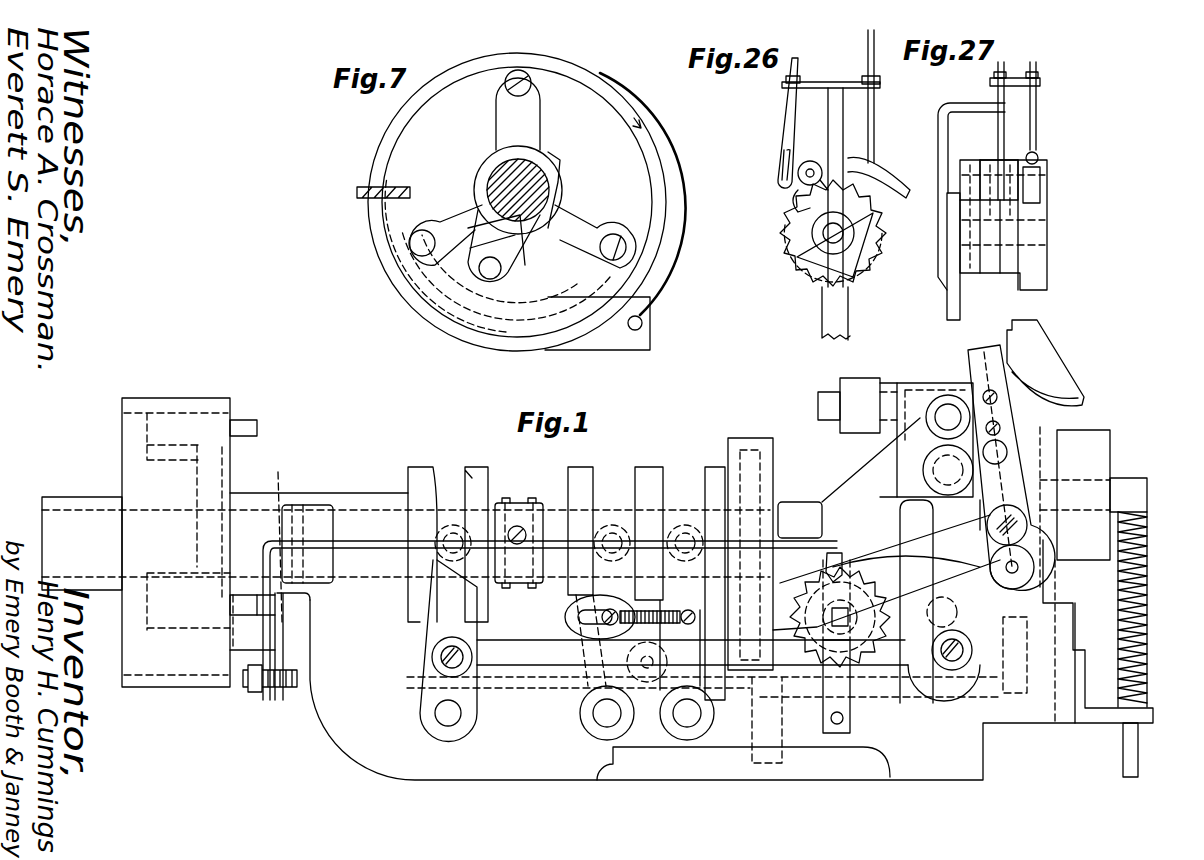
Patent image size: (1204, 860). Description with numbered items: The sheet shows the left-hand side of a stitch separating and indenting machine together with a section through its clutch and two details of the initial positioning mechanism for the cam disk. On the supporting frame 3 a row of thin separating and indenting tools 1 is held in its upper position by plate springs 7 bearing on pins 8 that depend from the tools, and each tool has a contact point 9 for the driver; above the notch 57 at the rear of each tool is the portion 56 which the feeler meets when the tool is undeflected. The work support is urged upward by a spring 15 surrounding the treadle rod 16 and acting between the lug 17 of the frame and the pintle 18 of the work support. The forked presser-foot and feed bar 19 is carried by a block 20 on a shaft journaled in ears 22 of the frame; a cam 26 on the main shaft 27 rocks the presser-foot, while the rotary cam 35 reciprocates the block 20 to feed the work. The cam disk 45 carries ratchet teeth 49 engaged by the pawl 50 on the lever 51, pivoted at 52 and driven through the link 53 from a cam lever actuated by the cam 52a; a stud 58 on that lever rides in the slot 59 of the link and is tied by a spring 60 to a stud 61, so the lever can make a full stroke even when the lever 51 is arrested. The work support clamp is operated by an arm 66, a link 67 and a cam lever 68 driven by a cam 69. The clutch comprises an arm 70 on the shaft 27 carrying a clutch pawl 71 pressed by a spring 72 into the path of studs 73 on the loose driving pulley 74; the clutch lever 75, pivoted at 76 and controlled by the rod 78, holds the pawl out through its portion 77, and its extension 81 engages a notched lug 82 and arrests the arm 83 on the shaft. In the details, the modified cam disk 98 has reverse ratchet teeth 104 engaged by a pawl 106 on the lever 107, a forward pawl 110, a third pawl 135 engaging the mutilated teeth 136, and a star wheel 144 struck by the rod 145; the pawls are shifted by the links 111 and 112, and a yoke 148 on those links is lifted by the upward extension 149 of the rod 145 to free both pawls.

In FIG. 1, the separating and indenting tools 1 is at (1050, 365).
In FIG. 1, the supporting frame 3 is at (375, 758).
In FIG. 1, the plate springs 7 is at (286, 587).
In FIG. 1, the pins 8 is at (823, 715).
In FIG. 26, the contact points 9 is at (790, 235).
In FIG. 1, the spring 15 is at (1148, 548).
In FIG. 1, the treadle rod 16 is at (1138, 752).
In FIG. 1, the lug 17 is at (1148, 712).
In FIG. 1, the pintle 18 is at (1148, 492).
In FIG. 1, the forked presser-foot and feed bar 19 is at (1080, 400).
In FIG. 1, the block 20 is at (948, 383).
In FIG. 7, the ears 22 is at (492, 178).
In FIG. 1, the cam 26 is at (715, 462).
In FIG. 1, the main shaft 27 is at (88, 497).
In FIG. 1, the rotary cam 35 is at (750, 438).
In FIG. 1, the cam disk 45 is at (840, 617).
In FIG. 1, the ratchet teeth 49 is at (838, 560).
In FIG. 1, the pawl 50 is at (884, 555).
In FIG. 1, the lever 51 is at (1020, 478).
In FIG. 1, the pivot 52 is at (590, 695).
In FIG. 1, the cam 52a is at (590, 475).
In FIG. 1, the link 53 is at (748, 605).
In FIG. 1, the portion above the notch 56 is at (1008, 322).
In FIG. 1, the notch 57 is at (1037, 322).
In FIG. 1, the stud 58 is at (600, 624).
In FIG. 1, the slot 59 is at (578, 612).
In FIG. 1, the spring 60 is at (672, 610).
In FIG. 1, the stud 61 is at (688, 625).
In FIG. 1, the arm 66 is at (935, 513).
In FIG. 1, the link 67 is at (893, 690).
In FIG. 1, the cam lever 68 is at (415, 647).
In FIG. 1, the cam 69 is at (410, 475).
In FIG. 7, the arm 70 is at (520, 272).
In FIG. 7, the clutch pawl 71 is at (520, 292).
In FIG. 1, the clutch pawl 71 is at (285, 638).
In FIG. 7, the spring 72 is at (563, 203).
In FIG. 7, the studs 73 is at (627, 252).
In FIG. 1, the studs 73 is at (242, 425).
In FIG. 7, the loose driving pulley 74 is at (668, 162).
In FIG. 1, the clutch lever 75 is at (345, 544).
In FIG. 1, the pivot 76 is at (302, 515).
In FIG. 7, the downwardly and laterally extending portion 77 is at (490, 347).
In FIG. 1, the downwardly and laterally extending portion 77 is at (265, 680).
In FIG. 1, the rod 78 is at (290, 695).
In FIG. 1, the extension 81 is at (552, 545).
In FIG. 1, the notched lug 82 is at (800, 520).
In FIG. 1, the arm 83 is at (515, 500).
In FIG. 27, the cam disk 98 is at (1038, 262).
In FIG. 27, the ratchet teeth 104 is at (1020, 290).
In FIG. 26, the pawl 106 is at (812, 160).
In FIG. 27, the pawl 106 is at (1038, 152).
In FIG. 26, the lever 107 is at (795, 200).
In FIG. 27, the lever 107 is at (943, 200).
In FIG. 26, the pawl 110 is at (891, 177).
In FIG. 27, the pawl 110 is at (1042, 175).
In FIG. 26, the link 111 is at (785, 124).
In FIG. 27, the link 111 is at (1000, 138).
In FIG. 26, the link 112 is at (880, 92).
In FIG. 27, the link 112 is at (1040, 115).
In FIG. 27, the third pawl 135 is at (990, 170).
In FIG. 27, the third set of ratchet teeth 136 is at (988, 288).
In FIG. 26, the star wheel 144 is at (866, 240).
In FIG. 26, the rod 145 is at (822, 306).
In FIG. 27, the rod 145 is at (950, 305).
In FIG. 26, the yoke 148 is at (814, 88).
In FIG. 27, the upward extension 149 is at (937, 120).